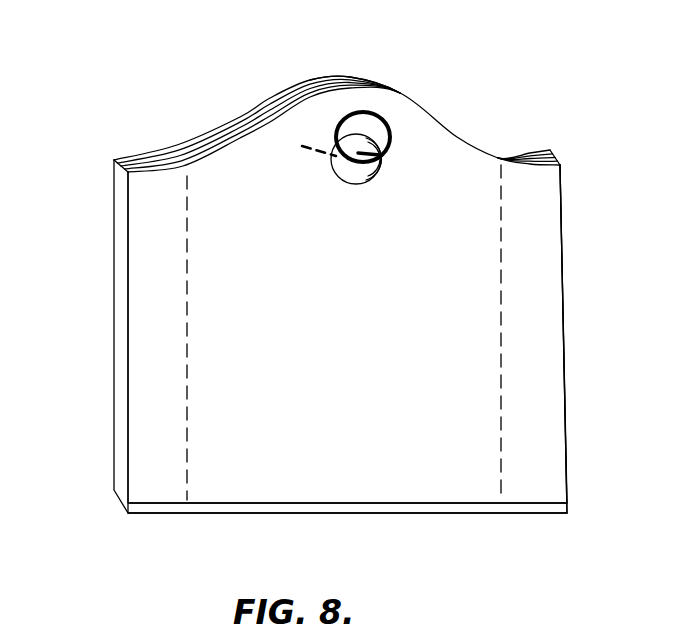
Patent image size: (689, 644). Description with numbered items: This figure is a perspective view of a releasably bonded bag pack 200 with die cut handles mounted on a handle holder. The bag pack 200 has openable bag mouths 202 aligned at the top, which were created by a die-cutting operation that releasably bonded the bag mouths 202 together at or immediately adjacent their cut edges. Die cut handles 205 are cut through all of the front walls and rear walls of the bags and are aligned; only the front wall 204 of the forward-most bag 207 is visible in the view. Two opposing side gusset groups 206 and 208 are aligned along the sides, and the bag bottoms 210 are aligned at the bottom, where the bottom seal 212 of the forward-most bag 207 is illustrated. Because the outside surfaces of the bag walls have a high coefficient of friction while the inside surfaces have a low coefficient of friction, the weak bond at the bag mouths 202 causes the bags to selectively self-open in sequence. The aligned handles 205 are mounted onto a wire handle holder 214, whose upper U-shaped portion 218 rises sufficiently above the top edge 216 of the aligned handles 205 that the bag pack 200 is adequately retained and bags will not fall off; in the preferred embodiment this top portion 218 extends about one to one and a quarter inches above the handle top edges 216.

The bag pack 200 is at (567, 280).
The openable bag mouths 202 is at (233, 122).
The front wall 204 is at (378, 294).
The die cut handles 205 is at (338, 160).
The side gusset group 206 is at (145, 258).
The forward-most bag 207 is at (213, 380).
The side gusset group 208 is at (552, 327).
The bag bottoms 210 is at (350, 505).
The bottom seal 212 is at (412, 503).
The wire handle holder 214 is at (393, 146).
The top edge 216 is at (365, 130).
The U-shaped portion 218 is at (348, 112).